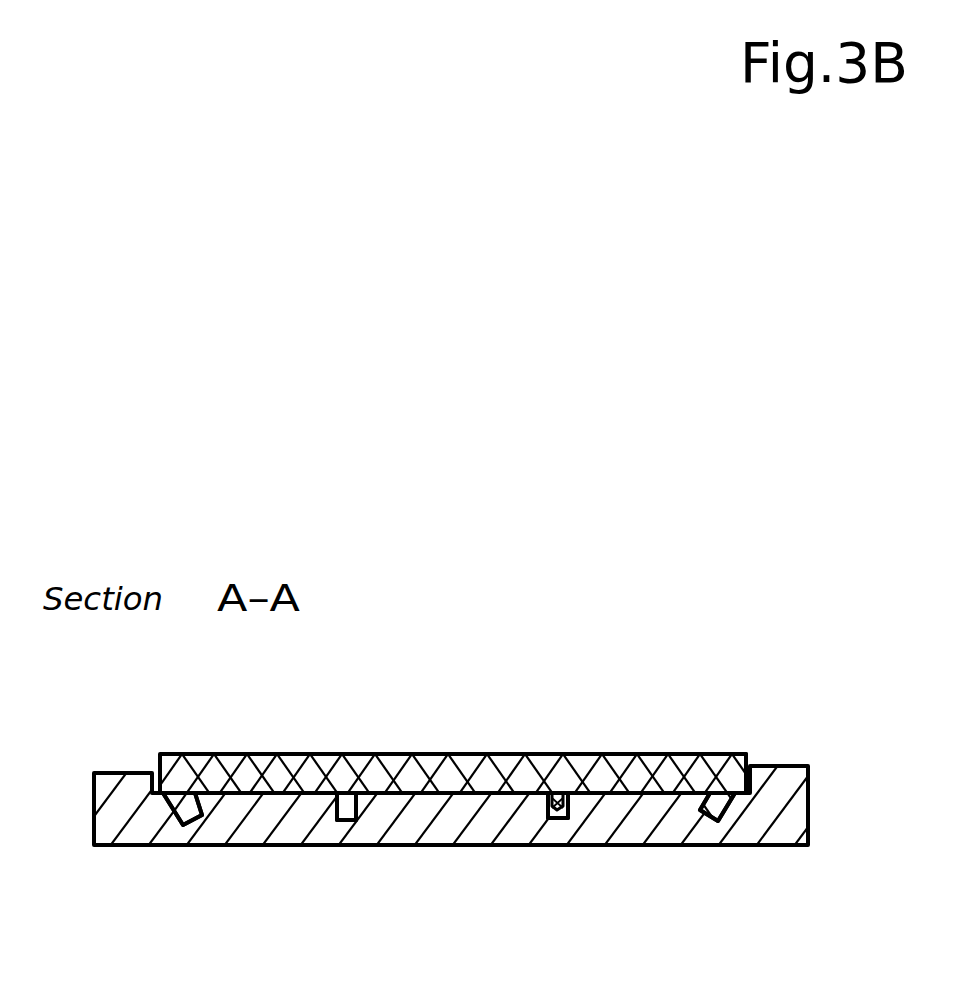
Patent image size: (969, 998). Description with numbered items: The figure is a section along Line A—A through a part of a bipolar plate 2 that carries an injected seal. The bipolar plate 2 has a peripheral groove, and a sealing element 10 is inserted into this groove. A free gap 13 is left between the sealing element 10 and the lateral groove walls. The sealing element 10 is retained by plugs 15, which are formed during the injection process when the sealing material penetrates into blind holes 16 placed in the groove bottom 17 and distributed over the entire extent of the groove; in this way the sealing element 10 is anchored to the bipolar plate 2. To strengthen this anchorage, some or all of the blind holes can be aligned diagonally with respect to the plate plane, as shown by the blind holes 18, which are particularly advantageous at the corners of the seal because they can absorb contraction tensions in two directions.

The bipolar plate 2 is at (767, 808).
The sealing element 10 is at (440, 775).
The free gap 13 is at (756, 750).
The plug 15 is at (559, 797).
The blind hole 16 is at (336, 822).
The groove bottom 17 is at (447, 793).
The diagonal blind hole 18 is at (181, 820).